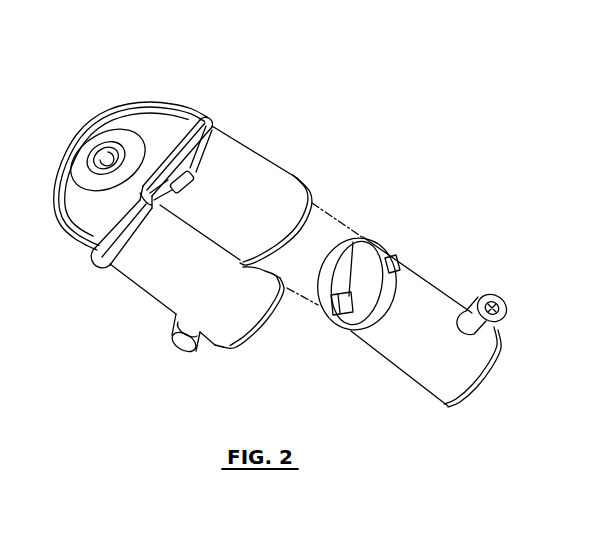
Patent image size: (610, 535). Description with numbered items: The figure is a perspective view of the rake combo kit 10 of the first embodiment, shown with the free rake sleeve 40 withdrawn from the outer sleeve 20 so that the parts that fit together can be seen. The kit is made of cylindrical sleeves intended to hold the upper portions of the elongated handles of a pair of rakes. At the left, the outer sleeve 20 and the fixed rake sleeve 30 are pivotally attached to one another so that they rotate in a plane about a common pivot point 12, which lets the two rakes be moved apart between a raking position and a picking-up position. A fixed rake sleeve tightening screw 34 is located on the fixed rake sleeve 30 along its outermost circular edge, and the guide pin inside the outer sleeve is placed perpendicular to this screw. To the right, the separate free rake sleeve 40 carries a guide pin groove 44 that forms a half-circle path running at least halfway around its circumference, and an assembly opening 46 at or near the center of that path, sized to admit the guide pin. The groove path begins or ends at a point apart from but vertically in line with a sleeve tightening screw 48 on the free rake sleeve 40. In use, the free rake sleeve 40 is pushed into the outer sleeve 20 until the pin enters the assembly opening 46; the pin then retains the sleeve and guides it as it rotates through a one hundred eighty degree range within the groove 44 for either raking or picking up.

The rake combo kit 10 is at (186, 82).
The common pivot point 12 is at (100, 154).
The outer sleeve 20 is at (267, 160).
The fixed rake sleeve 30 is at (127, 278).
The fixed rake sleeve tightening screw 34 is at (180, 345).
The free rake sleeve 40 is at (442, 303).
The guide pin groove 44 is at (390, 262).
The assembly opening 46 is at (318, 312).
The sleeve tightening screw 48 is at (505, 304).